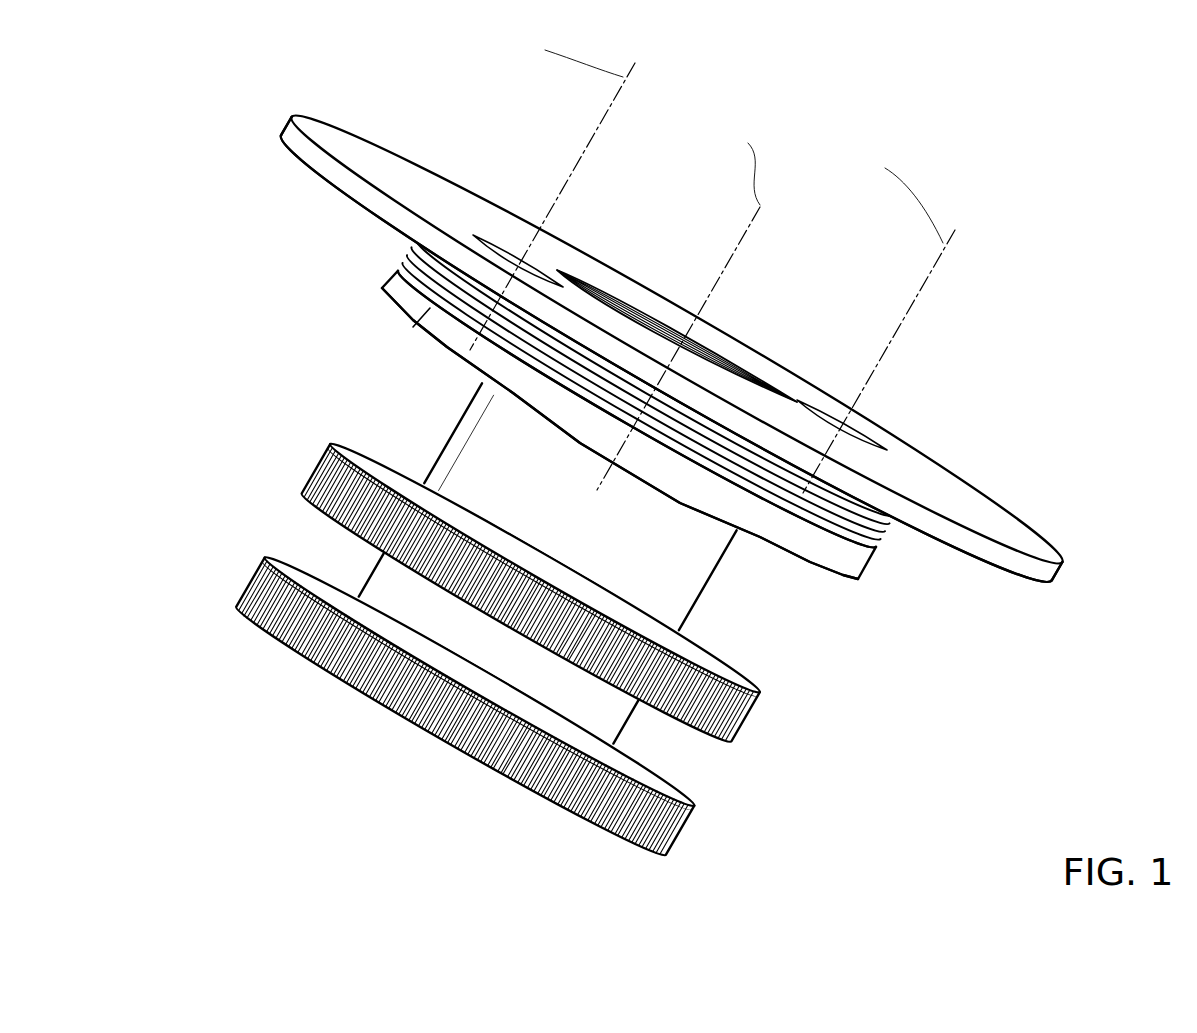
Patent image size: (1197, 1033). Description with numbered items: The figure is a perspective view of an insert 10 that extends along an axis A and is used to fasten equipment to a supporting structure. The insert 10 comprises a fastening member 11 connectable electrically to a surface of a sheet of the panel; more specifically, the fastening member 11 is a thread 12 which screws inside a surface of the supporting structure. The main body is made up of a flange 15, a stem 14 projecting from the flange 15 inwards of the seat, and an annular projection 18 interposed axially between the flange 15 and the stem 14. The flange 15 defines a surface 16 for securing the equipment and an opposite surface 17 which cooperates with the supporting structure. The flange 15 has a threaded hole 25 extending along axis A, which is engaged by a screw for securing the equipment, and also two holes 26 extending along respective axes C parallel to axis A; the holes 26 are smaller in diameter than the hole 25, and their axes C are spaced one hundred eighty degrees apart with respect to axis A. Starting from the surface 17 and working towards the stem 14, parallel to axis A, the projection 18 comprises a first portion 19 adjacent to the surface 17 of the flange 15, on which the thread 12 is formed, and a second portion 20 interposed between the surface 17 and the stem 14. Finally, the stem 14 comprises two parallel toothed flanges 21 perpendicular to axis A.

The insert 10 is at (631, 440).
The fastening member 11 is at (918, 495).
The thread 12 is at (589, 389).
The stem 14 is at (690, 578).
The flange 15 is at (638, 317).
The surface 16 is at (372, 168).
The surface 17 is at (323, 187).
The annular projection 18 is at (888, 598).
The first portion 19 is at (890, 530).
The second portion 20 is at (803, 548).
The toothed flanges 21 is at (263, 580).
The threaded hole 25 is at (620, 290).
The holes 26 is at (512, 245).